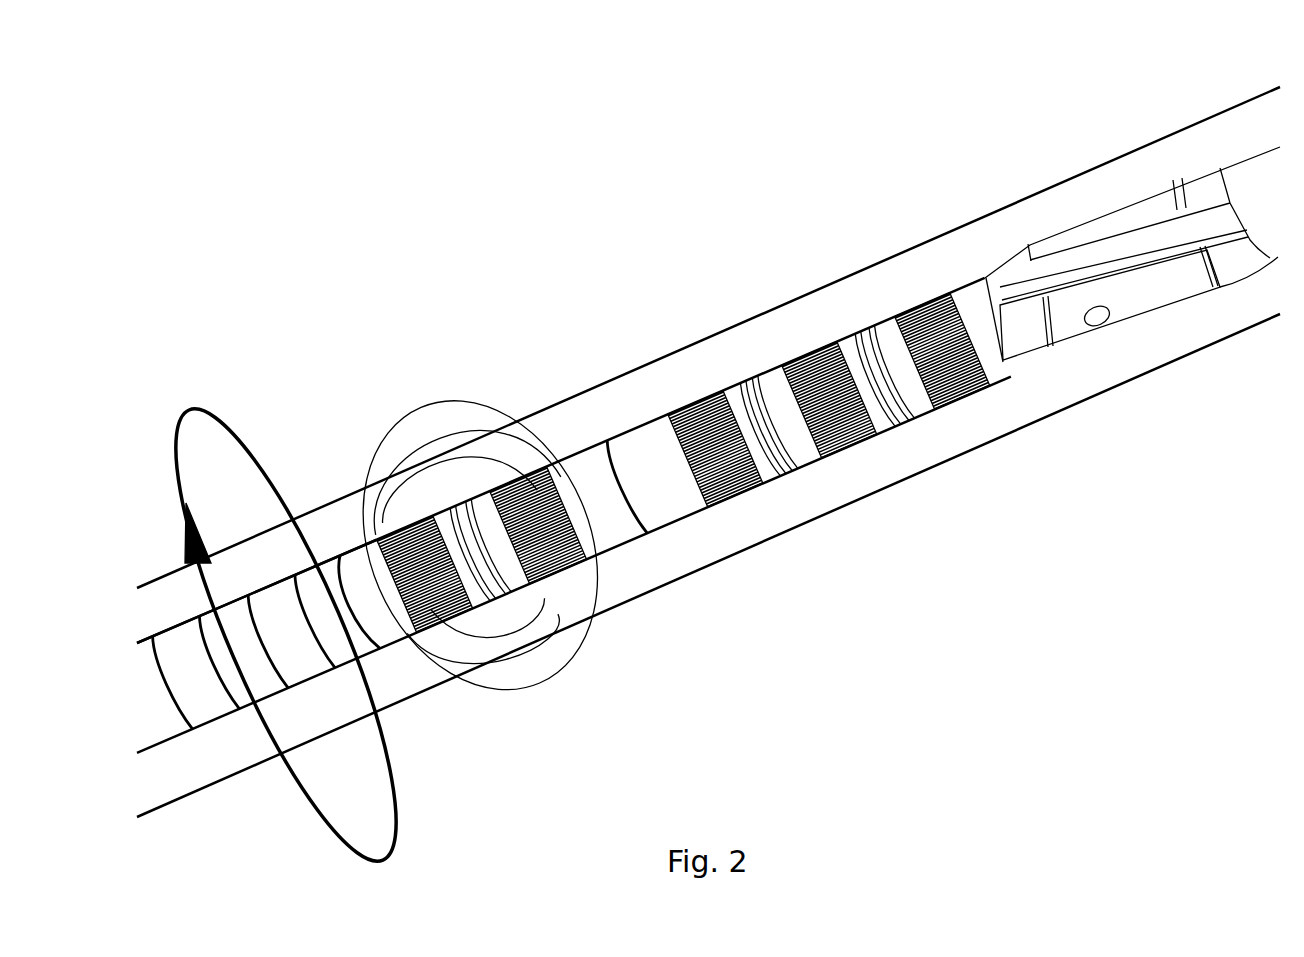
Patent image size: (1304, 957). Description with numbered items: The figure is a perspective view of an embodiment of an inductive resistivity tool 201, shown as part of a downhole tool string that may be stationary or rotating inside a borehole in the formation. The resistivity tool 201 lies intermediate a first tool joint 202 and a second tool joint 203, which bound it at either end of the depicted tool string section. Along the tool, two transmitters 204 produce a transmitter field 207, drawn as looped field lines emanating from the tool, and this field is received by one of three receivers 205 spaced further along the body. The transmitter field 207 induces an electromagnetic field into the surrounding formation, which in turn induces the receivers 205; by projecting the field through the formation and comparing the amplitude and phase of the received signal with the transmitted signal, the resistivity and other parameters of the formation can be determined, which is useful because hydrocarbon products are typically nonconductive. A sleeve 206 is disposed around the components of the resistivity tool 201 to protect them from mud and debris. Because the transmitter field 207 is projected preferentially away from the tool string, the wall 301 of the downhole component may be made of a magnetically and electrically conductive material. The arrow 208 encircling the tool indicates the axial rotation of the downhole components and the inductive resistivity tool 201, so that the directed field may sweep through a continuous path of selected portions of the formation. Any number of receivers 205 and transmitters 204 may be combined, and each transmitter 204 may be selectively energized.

The inductive resistivity tool 201 is at (401, 196).
The first tool joint 202 is at (405, 600).
The second tool joint 203 is at (951, 296).
The transmitter 204 is at (560, 600).
The receiver 205 is at (962, 400).
The sleeve 206 is at (629, 408).
The transmitter field 207 is at (518, 412).
The arrow 208 is at (259, 437).
The wall 301 is at (362, 555).